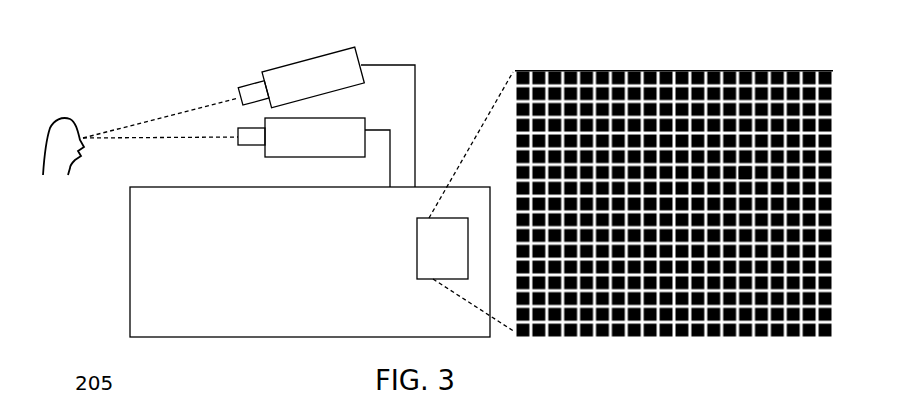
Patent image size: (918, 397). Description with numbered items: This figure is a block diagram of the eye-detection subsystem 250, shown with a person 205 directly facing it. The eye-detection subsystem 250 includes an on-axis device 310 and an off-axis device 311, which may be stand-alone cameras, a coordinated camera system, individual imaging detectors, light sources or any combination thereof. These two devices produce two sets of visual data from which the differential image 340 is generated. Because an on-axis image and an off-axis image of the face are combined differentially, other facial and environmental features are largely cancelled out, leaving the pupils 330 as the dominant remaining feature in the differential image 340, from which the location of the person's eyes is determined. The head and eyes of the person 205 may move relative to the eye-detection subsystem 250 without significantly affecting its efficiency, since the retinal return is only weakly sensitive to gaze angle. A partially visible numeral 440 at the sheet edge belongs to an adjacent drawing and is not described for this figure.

The person 205 is at (67, 108).
The on-axis device 310 is at (293, 53).
The off-axis device 311 is at (256, 157).
The eye-detection subsystem 250 is at (299, 283).
The differential image 340 is at (757, 60).
The pupils 330 is at (754, 168).
The element 440 is at (808, 396).